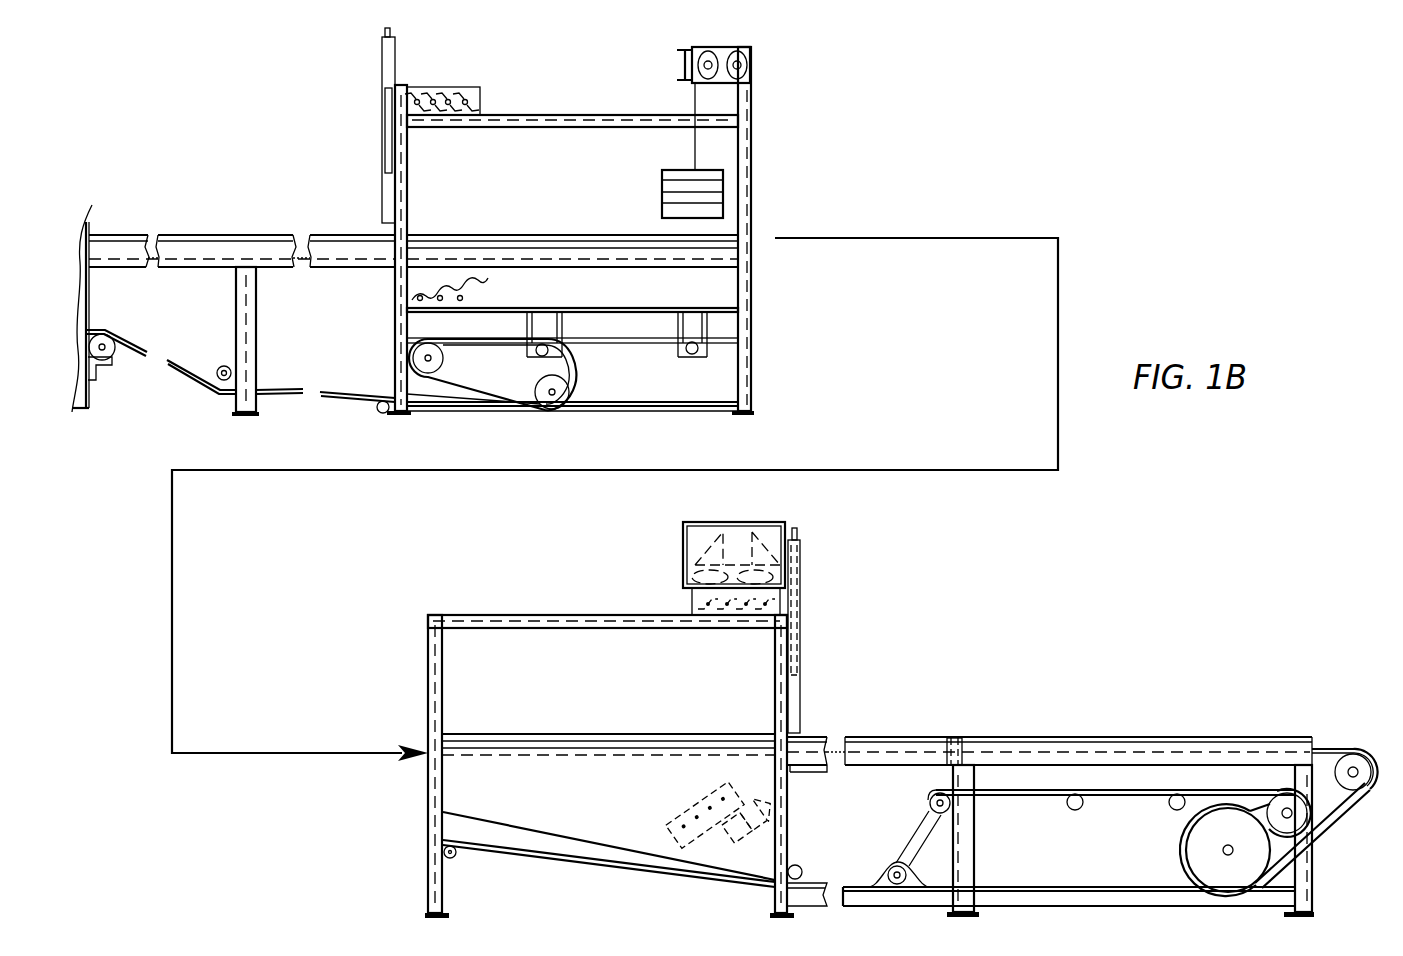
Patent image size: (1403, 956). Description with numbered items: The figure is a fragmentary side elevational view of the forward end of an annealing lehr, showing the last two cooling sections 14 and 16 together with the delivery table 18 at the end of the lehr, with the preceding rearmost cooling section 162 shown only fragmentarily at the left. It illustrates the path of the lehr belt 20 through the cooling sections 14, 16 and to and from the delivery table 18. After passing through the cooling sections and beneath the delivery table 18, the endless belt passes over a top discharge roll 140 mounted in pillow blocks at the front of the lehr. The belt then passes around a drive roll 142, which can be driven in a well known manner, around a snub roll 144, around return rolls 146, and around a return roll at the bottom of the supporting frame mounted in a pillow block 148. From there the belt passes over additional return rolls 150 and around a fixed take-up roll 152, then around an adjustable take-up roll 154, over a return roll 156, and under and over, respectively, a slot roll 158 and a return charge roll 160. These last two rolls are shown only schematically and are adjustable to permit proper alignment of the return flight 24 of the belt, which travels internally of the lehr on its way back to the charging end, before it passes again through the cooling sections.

The cooling section 14 is at (758, 153).
The cooling section 16 is at (804, 594).
The delivery table section 18 is at (1029, 733).
The lehr belt 20 is at (310, 246).
The return flight 24 is at (360, 402).
The top discharge roll 140 is at (1362, 757).
The drive roll 142 is at (1243, 868).
The snub roll 144 is at (1277, 807).
The return rolls 146 is at (931, 796).
The pillow block 148 is at (888, 866).
The return rolls 150 is at (548, 351).
The fixed take-up roll 152 is at (443, 358).
The adjustable take-up roll 154 is at (571, 389).
The return roll 156 is at (384, 414).
The slot roll 158 is at (220, 366).
The return charge roll 160 is at (113, 358).
The rearmost cooling section 162 is at (88, 301).